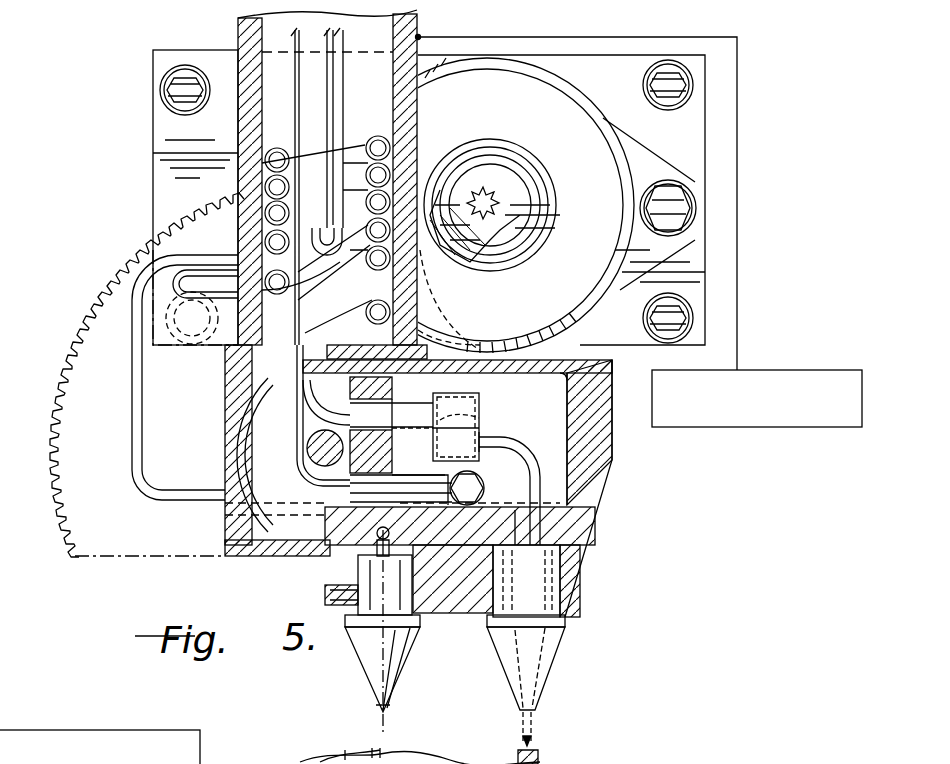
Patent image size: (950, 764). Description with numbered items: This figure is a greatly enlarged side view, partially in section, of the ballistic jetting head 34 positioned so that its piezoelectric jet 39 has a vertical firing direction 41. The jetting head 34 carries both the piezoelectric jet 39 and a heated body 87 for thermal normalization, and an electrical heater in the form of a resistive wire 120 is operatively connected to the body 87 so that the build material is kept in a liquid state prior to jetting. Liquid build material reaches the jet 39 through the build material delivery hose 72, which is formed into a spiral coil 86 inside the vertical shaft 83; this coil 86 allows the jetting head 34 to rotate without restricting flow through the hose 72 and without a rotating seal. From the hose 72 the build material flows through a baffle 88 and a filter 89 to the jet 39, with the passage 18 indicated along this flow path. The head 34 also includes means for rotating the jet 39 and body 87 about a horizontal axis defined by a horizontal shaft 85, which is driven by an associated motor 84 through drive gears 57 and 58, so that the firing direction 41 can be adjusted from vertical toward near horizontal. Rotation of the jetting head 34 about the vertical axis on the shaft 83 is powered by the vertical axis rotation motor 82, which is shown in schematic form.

The ballistic jetting head 34 is at (140, 148).
The build material delivery hose 72 is at (350, 160).
The vertical shaft 83 is at (310, 762).
The spiral coil 86 is at (238, 228).
The drive gear 57 is at (505, 186).
The drive gear 58 is at (487, 205).
The motor 84 is at (600, 305).
The vertical axis rotation motor 82 is at (705, 428).
The fluid passage 18 is at (394, 390).
The baffle 88 is at (480, 400).
The filter 89 is at (482, 418).
The horizontal shaft 85 is at (302, 460).
The resistive wire 120 is at (327, 590).
The heated body 87 is at (393, 648).
The piezoelectric jet 39 is at (530, 681).
The firing direction 41 is at (535, 726).